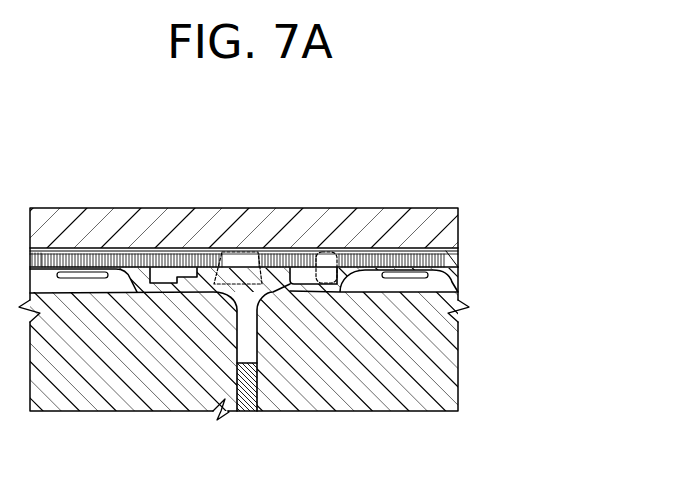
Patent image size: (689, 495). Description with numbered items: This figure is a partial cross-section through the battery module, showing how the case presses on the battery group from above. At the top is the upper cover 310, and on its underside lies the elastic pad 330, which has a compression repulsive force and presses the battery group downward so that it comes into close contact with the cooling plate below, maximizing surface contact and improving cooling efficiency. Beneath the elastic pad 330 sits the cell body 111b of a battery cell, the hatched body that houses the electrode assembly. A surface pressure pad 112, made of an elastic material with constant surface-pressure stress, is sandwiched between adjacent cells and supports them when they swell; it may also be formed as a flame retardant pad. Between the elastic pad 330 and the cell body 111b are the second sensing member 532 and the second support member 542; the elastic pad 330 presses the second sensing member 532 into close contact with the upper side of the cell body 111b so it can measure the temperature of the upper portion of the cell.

The upper cover 310 is at (459, 226).
The elastic pad 330 is at (459, 261).
The cell body 111b is at (457, 370).
The surface pressure pad 112 is at (255, 387).
The second sensing member 532 is at (246, 268).
The second support member 542 is at (327, 274).